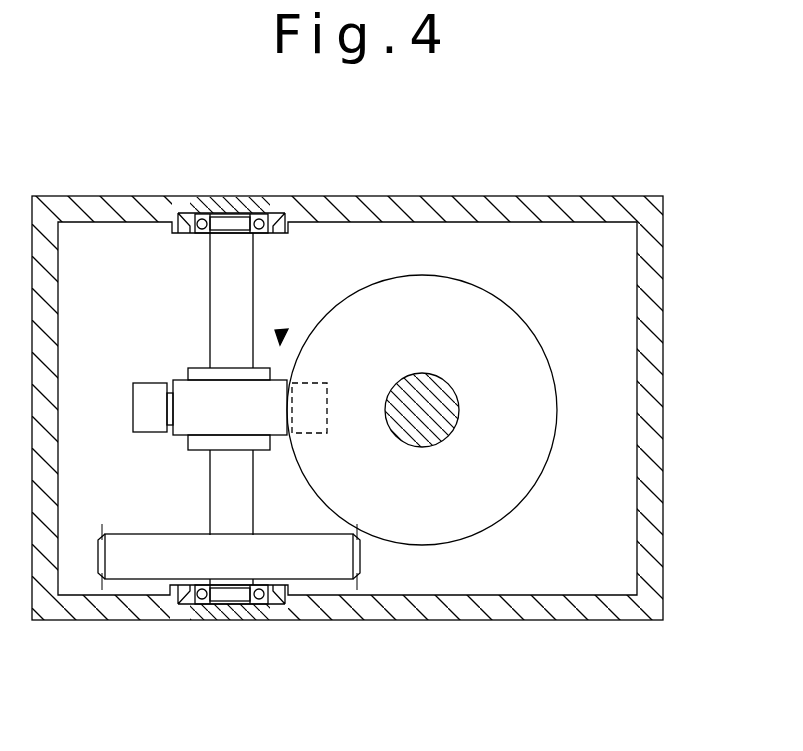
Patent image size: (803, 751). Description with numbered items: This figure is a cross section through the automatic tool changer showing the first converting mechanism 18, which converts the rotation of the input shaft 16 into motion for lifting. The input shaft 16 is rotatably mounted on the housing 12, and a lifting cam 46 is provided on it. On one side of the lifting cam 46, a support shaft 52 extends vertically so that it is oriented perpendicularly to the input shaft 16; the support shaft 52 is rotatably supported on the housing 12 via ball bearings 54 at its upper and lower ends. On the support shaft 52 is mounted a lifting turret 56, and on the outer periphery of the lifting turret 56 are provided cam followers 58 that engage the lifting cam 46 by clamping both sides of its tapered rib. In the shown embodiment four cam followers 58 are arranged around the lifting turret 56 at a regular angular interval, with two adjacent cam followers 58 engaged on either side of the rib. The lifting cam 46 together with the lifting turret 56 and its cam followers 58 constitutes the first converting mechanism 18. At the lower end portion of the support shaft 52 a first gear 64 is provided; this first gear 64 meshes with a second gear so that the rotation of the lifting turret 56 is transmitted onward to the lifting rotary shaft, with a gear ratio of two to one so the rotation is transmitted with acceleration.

The housing 12 is at (653, 556).
The input shaft 16 is at (447, 417).
The first converting mechanism 18 is at (282, 330).
The lifting cam 46 is at (551, 333).
The support shaft 52 is at (217, 306).
The ball bearings 54 is at (202, 200).
The lifting turret 56 is at (181, 388).
The cam followers 58 is at (135, 408).
The first gear 64 is at (133, 565).